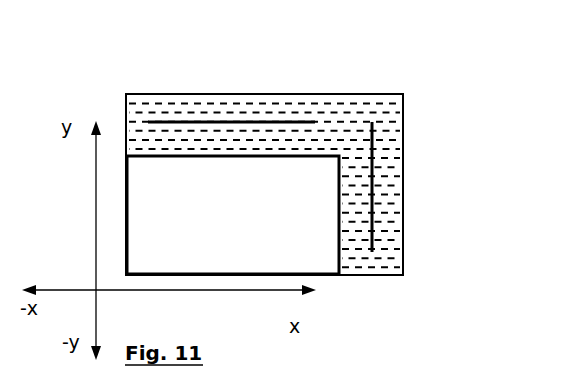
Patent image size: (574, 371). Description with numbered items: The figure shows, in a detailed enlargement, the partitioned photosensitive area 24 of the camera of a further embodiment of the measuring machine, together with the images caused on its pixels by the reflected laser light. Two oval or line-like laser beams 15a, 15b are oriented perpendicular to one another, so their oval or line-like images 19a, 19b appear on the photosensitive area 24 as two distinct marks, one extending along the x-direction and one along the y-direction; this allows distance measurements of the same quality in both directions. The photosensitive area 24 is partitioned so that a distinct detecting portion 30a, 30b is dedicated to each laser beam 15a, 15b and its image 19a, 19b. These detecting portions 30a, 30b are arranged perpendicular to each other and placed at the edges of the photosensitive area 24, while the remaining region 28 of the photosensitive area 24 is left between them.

The photosensitive area 24 is at (128, 78).
The inner region / opening 28 is at (240, 231).
The image 19b is at (231, 83).
The laser beam 15b is at (190, 120).
The image 19a is at (429, 155).
The laser beam 15a is at (374, 152).
The detecting portion 30b is at (260, 105).
The detecting portion 30a is at (387, 200).